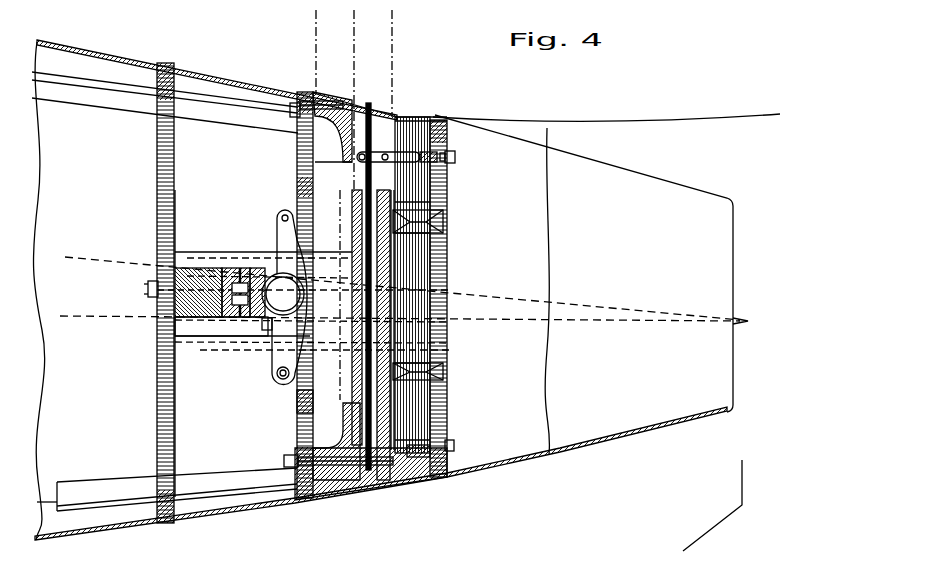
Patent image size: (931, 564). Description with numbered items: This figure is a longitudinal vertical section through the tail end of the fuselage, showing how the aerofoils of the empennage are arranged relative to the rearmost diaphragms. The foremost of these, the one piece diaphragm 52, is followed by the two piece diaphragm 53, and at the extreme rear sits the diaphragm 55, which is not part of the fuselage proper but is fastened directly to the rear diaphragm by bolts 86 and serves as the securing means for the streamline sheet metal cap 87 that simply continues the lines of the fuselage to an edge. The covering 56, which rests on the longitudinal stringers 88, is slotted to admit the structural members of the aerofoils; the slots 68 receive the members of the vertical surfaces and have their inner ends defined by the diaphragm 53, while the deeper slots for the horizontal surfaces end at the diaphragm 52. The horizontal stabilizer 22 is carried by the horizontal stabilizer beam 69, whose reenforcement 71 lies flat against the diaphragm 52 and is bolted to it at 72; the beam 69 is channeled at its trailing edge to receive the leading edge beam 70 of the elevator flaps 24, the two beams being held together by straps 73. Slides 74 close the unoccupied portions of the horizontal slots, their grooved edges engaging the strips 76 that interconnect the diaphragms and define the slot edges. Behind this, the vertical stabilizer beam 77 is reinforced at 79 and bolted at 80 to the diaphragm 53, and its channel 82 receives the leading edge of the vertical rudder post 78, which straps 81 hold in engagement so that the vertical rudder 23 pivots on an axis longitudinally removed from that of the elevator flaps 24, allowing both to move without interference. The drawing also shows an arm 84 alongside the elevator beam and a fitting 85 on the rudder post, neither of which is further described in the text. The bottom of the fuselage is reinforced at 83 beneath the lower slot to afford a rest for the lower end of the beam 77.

The horizontal stabilizer 22 is at (88, 318).
The vertical rudder 23 is at (665, 115).
The elevator flaps 24 is at (618, 324).
The diaphragm 52 is at (160, 152).
The diaphragm 53 is at (297, 412).
The diaphragm 55 is at (447, 183).
The covering 56 is at (86, 52).
The slots 68 is at (314, 100).
The horizontal stabilizer beam 69 is at (232, 273).
The leading edge beam 70 is at (278, 276).
The reenforcement 71 is at (197, 277).
The bolts 72 is at (148, 283).
The straps 73 is at (252, 272).
The slides 74 is at (264, 323).
The strips 76 is at (178, 252).
The vertical stabilizer beam 77 is at (358, 128).
The vertical rudder post 78 is at (413, 133).
The reinforcement 79 is at (343, 148).
The bolts 80 is at (292, 105).
The straps 81 is at (423, 157).
The channel 82 is at (395, 250).
The reinforcement 83 is at (338, 483).
The lever arm 84 is at (277, 356).
The collar 85 is at (440, 368).
The bolts 86 is at (455, 156).
The cap 87 is at (707, 209).
The stringers 88 is at (74, 96).